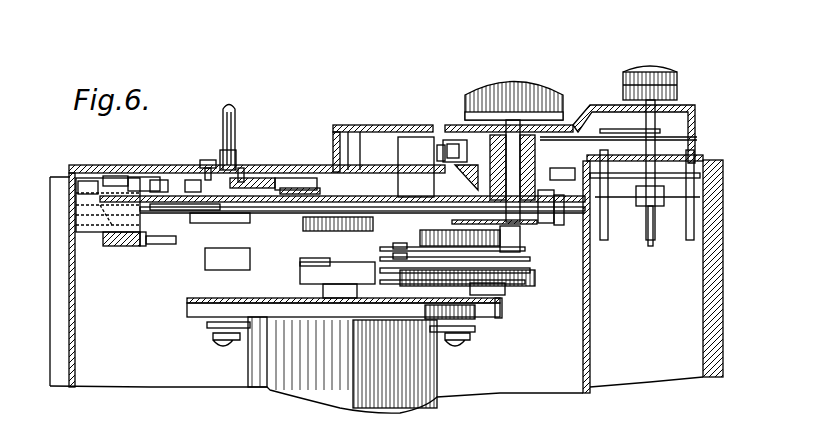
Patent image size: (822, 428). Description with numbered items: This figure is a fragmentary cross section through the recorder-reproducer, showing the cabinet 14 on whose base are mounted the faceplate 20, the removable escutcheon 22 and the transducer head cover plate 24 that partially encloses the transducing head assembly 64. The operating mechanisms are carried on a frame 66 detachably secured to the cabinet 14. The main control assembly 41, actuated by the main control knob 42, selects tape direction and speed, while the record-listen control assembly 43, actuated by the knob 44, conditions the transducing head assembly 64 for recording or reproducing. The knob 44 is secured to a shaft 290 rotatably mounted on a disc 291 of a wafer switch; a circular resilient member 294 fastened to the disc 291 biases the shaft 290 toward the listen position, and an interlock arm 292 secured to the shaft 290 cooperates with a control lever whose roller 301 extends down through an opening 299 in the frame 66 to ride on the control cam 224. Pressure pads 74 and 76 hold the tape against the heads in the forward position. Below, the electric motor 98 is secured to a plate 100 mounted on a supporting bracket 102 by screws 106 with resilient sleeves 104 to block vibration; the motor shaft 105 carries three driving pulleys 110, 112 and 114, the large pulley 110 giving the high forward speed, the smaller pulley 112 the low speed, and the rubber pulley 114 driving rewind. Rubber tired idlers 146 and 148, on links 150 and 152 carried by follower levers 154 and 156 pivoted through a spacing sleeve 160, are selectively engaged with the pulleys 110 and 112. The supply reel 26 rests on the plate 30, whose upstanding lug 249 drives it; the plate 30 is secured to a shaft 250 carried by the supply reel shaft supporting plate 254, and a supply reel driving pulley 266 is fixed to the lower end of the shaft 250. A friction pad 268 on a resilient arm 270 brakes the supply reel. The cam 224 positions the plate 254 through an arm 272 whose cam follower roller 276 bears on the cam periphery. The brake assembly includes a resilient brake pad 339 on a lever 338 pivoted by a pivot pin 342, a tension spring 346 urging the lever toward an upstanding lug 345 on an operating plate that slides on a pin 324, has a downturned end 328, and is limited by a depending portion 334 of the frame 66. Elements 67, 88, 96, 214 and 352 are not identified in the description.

The cabinet 14 is at (705, 310).
The faceplate 20 is at (76, 166).
The removable escutcheon 22 is at (610, 106).
The transducer head cover plate 24 is at (372, 126).
The supply reel 26 is at (560, 176).
The plate 30 is at (241, 170).
The main control assembly 41 is at (462, 105).
The main control knob 42 is at (530, 76).
The record-listen control assembly 43 is at (628, 134).
The knob 44 is at (678, 86).
The transducing head assembly 64 is at (398, 160).
The frame 66 is at (704, 158).
The nut 67 is at (494, 180).
The pressure pad 74 is at (450, 156).
The pressure pad 76 is at (442, 150).
The shaft 88 is at (512, 125).
The wedge 96 is at (462, 180).
The electric motor 98 is at (397, 373).
The plate 100 is at (487, 319).
The supporting bracket 102 is at (190, 299).
The resilient sleeves 104 is at (210, 322).
The shaft 105 is at (345, 298).
The screws 106 is at (220, 346).
The large diameter driving pulley 110 is at (300, 272).
The smaller diameter driving pulley 112 is at (300, 261).
The driving pulley 114 is at (303, 225).
The rubber tired idler 146 is at (500, 290).
The rubber tired idler 148 is at (393, 246).
The link 150 is at (530, 272).
The link 152 is at (530, 260).
The follower lever 154 is at (525, 283).
The follower lever 156 is at (525, 250).
The spacing sleeve 160 is at (470, 275).
The gear 214 is at (446, 240).
The cam 224 is at (504, 238).
The upstanding lug 249 is at (222, 128).
The shaft 250 is at (237, 117).
The supply reel shaft supporting plate 254 is at (226, 223).
The supply reel driving pulley 266 is at (165, 244).
The friction pad 268 is at (110, 246).
The resilient arm 270 is at (92, 198).
The arm 272 is at (343, 208).
The cam follower roller 276 is at (452, 222).
The shaft 290 is at (656, 123).
The disc 291 is at (665, 207).
The interlock arm 292 is at (682, 178).
The circular resilient member 294 is at (608, 216).
The opening 299 is at (549, 202).
The roller 301 is at (555, 224).
The pin 324 is at (192, 182).
The end 328 is at (143, 246).
The depending portion 334 is at (172, 210).
The lever 338 is at (128, 184).
The resilient brake pad 339 is at (162, 182).
The pivot pin 342 is at (152, 184).
The upstanding lug 345 is at (208, 162).
The tension spring 346 is at (265, 178).
The member 352 is at (302, 186).